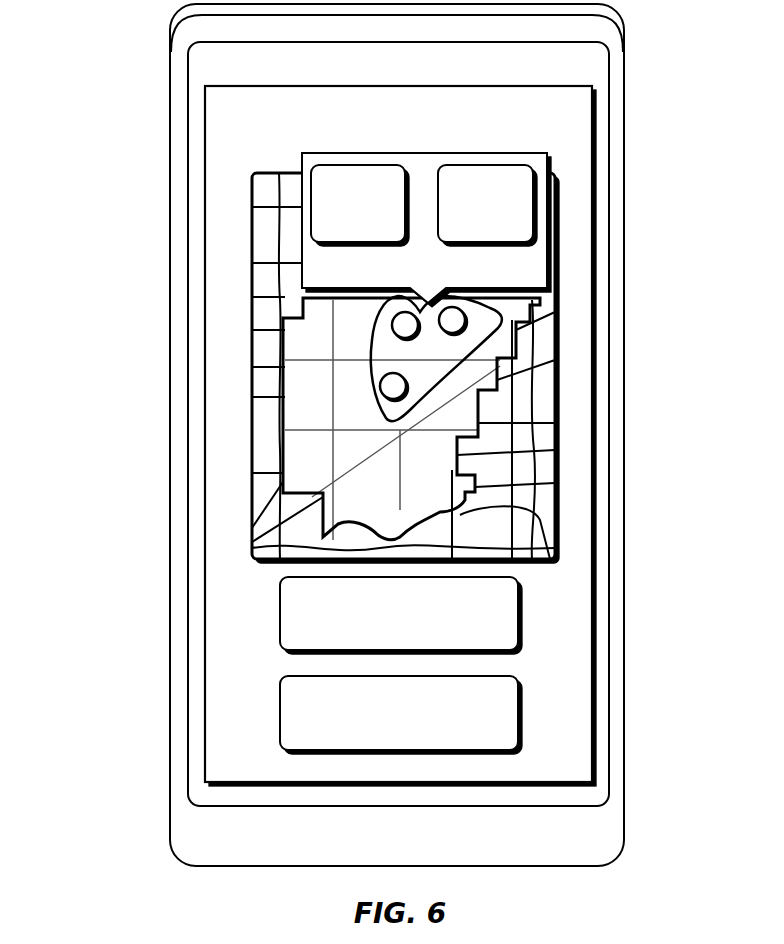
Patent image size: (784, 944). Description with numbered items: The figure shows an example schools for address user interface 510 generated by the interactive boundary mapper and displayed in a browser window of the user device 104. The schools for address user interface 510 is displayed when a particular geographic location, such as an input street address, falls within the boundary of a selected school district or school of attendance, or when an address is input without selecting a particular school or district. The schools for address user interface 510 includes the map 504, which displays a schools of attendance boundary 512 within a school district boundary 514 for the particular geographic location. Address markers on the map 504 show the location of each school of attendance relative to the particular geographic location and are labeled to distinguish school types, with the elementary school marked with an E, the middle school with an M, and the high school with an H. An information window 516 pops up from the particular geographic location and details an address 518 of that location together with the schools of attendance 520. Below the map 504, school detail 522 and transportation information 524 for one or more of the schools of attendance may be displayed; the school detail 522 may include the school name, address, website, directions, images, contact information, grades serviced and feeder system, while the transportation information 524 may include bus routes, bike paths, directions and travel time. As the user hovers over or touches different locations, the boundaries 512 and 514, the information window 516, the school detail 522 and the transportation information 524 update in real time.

The user device 104 is at (625, 797).
The schools for address user interface 510 is at (206, 257).
The map 504 is at (491, 368).
The schools of attendance boundary 512 is at (497, 366).
The school district boundary 514 is at (475, 478).
The information window 516 is at (426, 230).
The address 518 is at (360, 205).
The schools of attendance 520 is at (487, 205).
The school detail 522 is at (401, 615).
The transportation information 524 is at (401, 715).